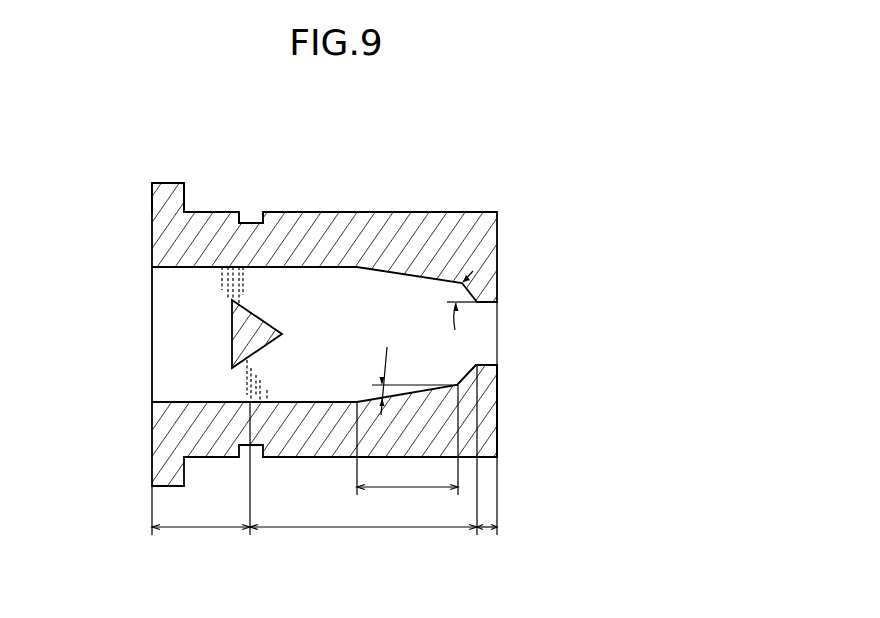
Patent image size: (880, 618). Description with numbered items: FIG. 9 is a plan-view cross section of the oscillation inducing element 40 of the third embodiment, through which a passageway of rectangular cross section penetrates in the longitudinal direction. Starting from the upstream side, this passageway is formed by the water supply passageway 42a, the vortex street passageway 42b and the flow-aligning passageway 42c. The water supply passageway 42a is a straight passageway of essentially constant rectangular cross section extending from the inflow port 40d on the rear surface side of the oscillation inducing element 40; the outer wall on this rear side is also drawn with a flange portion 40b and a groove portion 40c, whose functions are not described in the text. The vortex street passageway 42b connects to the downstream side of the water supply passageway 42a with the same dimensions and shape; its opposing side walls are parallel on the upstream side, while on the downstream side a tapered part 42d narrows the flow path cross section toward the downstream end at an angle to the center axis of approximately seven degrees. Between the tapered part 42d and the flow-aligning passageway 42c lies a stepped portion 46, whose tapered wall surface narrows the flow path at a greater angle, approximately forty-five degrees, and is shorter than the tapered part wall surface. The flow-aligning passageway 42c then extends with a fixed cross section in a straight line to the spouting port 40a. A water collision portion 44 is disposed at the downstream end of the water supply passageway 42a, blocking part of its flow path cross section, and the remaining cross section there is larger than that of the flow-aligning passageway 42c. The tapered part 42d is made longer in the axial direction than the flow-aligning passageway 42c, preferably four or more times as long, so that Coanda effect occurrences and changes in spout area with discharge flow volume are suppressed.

The oscillation inducing element 40 is at (513, 185).
The spouting port 40a is at (493, 354).
The flange portion 40b is at (167, 183).
The annular groove 40c is at (253, 223).
The inflow port 40d is at (157, 266).
The water collision portion 44 is at (258, 318).
The stepped portion 46 is at (463, 378).
The water supply passageway 42a is at (202, 528).
The vortex street passageway 42b is at (361, 528).
The flow-aligning passageway 42c is at (487, 528).
The tapered part 42d is at (407, 499).